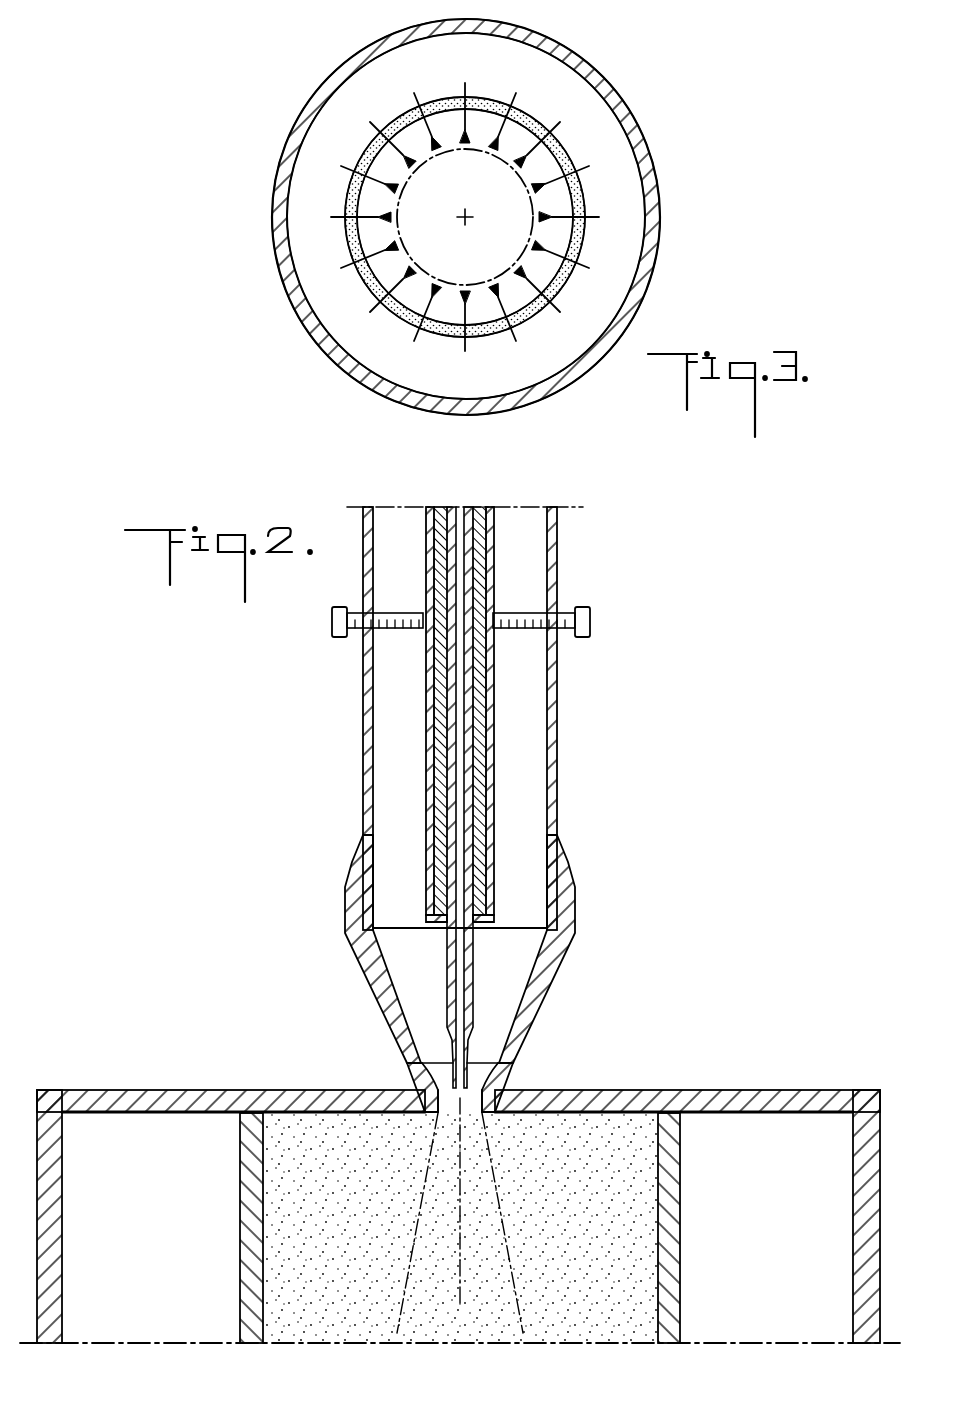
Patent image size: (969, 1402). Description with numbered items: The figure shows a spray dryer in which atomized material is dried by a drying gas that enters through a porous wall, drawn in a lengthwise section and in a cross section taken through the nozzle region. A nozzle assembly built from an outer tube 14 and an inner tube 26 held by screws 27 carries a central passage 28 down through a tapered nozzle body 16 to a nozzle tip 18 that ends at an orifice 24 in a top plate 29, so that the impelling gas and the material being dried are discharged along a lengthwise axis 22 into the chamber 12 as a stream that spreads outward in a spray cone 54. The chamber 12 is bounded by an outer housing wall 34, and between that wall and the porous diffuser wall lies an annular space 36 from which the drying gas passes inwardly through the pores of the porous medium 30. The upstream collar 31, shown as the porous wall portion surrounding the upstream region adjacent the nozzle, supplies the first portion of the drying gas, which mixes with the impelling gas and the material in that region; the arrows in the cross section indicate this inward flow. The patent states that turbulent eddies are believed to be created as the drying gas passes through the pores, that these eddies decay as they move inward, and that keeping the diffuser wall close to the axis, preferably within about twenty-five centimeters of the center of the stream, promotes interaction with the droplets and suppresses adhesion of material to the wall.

In FIG. 3, the chamber 12 is at (522, 333).
In FIG. 2, the chamber 12 is at (700, 1139).
In FIG. 2, the outer tube 14 is at (549, 553).
In FIG. 2, the conical nozzle body 16 is at (570, 945).
In FIG. 2, the nozzle tip 18 is at (412, 1076).
In FIG. 3, the central axis 22 is at (470, 214).
In FIG. 2, the central axis 22 is at (460, 1186).
In FIG. 2, the orifice 24 is at (473, 1122).
In FIG. 2, the inner tube 26 is at (494, 710).
In FIG. 2, the set screws 27 is at (355, 637).
In FIG. 2, the central passage 28 is at (462, 768).
In FIG. 2, the top plate 29 is at (633, 1092).
In FIG. 2, the porous medium 30 is at (460, 1228).
In FIG. 3, the upstream collar 31 is at (483, 347).
In FIG. 2, the upstream collar 31 is at (681, 1247).
In FIG. 3, the housing wall 34 is at (633, 309).
In FIG. 2, the housing wall 34 is at (890, 1120).
In FIG. 3, the annular space 36 is at (548, 72).
In FIG. 3, the spray cone 54 is at (405, 255).
In FIG. 2, the spray cone 54 is at (409, 1276).